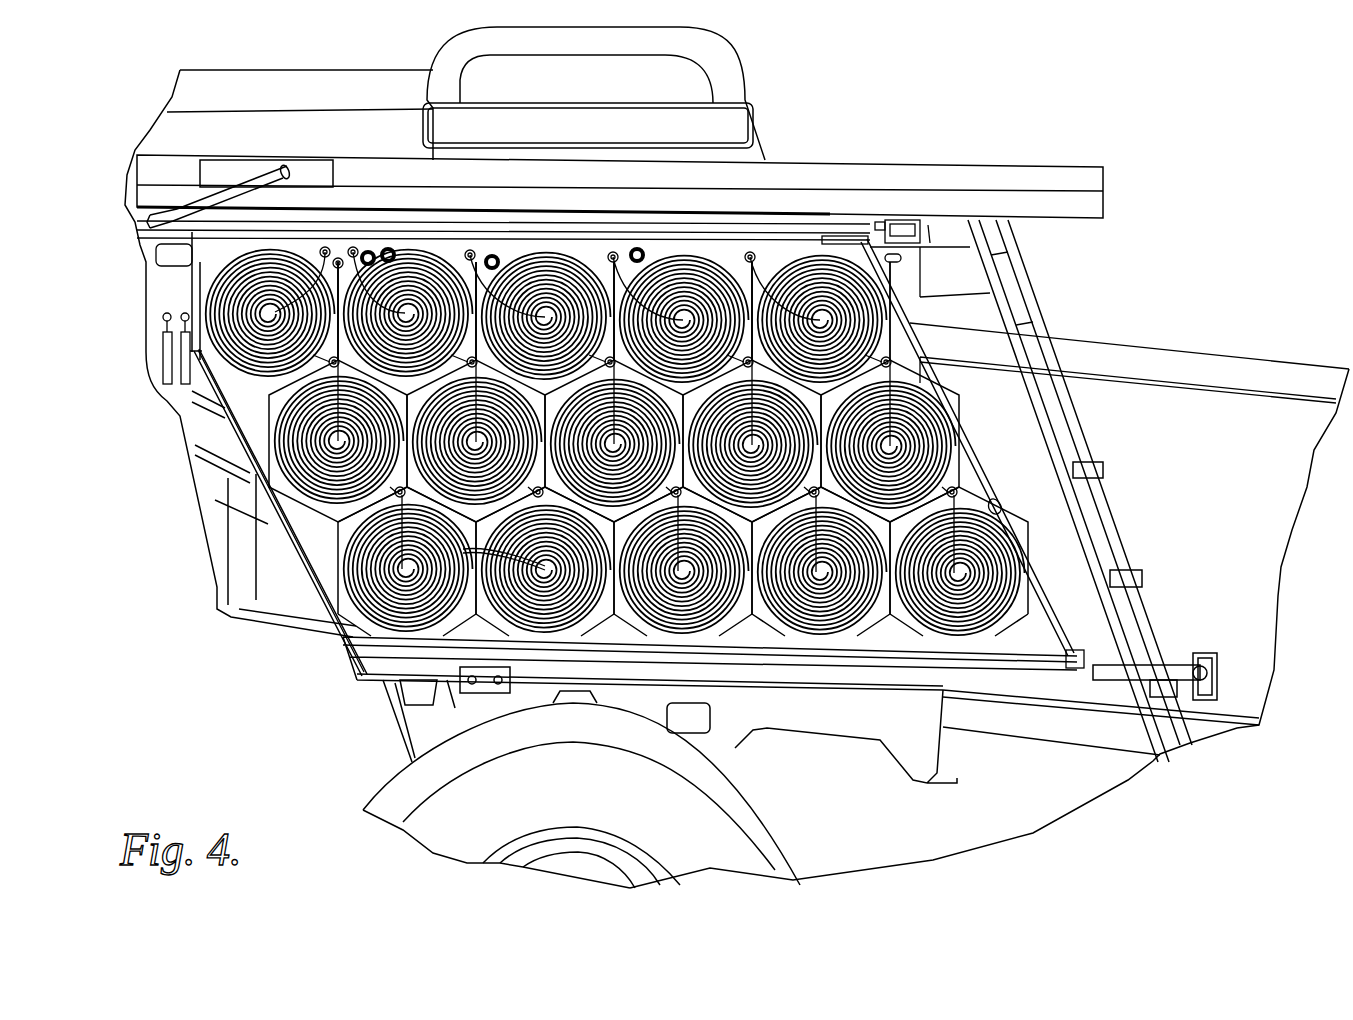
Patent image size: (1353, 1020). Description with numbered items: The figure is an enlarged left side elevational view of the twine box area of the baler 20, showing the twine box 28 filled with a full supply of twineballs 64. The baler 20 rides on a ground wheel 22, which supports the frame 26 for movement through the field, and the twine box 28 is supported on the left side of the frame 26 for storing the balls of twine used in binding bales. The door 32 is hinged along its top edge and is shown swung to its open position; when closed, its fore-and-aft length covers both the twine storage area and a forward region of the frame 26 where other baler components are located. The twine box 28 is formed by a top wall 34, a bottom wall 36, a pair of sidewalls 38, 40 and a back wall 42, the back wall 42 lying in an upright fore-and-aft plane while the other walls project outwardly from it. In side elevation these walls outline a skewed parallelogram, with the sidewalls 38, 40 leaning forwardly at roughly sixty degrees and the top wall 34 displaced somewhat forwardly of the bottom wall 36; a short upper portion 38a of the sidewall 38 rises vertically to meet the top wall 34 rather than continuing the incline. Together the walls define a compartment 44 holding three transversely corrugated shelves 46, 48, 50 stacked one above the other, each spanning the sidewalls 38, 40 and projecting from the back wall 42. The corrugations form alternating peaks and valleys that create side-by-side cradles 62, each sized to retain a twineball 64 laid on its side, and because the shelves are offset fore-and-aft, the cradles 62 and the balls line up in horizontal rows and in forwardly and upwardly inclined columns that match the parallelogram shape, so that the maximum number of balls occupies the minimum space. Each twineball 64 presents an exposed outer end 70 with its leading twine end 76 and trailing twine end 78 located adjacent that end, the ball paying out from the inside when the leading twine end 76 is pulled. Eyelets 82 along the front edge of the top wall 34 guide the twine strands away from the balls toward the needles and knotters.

The baler 20 is at (1022, 126).
The ground wheel 22 is at (711, 855).
The frame 26 is at (250, 608).
The twine box 28 is at (994, 452).
The door 32 is at (1105, 181).
The top wall 34 is at (825, 244).
The bottom wall 36 is at (770, 642).
The sidewall 38 is at (316, 538).
The upper portion of sidewall 38a is at (203, 258).
The sidewall 40 is at (997, 510).
The back wall 42 is at (906, 373).
The compartment 44 is at (1077, 622).
The top shelf 46 is at (256, 418).
The middle shelf 48 is at (300, 517).
The lower shelf 50 is at (413, 628).
The cradle 62 is at (253, 372).
The twineball 64 is at (649, 250).
The outer end 70 is at (688, 252).
The leading twine end 76 is at (628, 251).
The trailing twine end 78 is at (745, 356).
The eyelet 82 is at (352, 247).